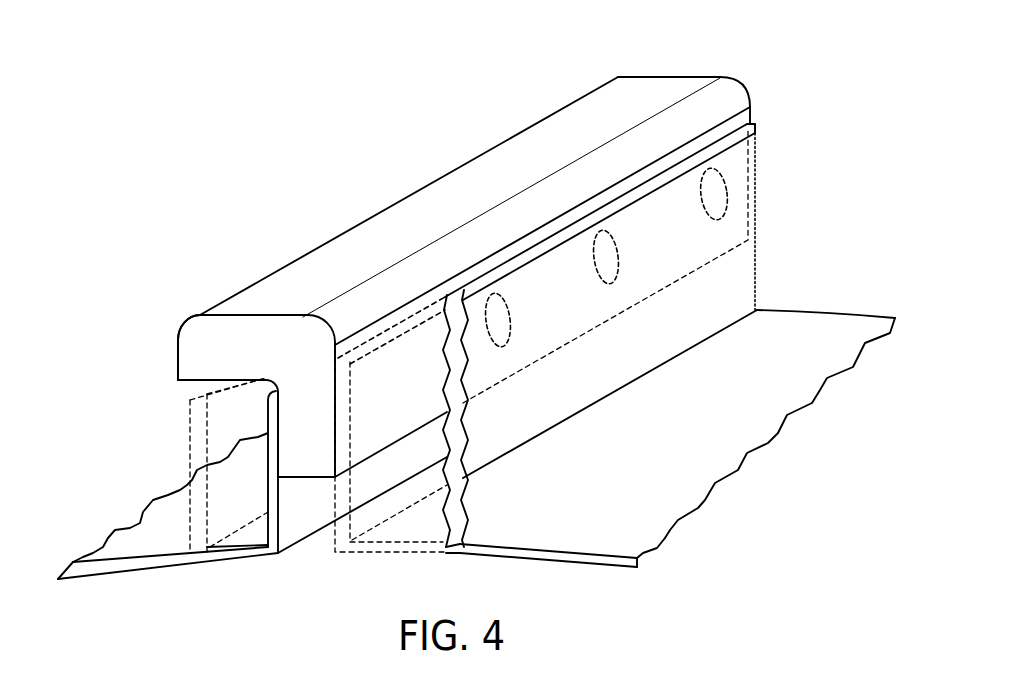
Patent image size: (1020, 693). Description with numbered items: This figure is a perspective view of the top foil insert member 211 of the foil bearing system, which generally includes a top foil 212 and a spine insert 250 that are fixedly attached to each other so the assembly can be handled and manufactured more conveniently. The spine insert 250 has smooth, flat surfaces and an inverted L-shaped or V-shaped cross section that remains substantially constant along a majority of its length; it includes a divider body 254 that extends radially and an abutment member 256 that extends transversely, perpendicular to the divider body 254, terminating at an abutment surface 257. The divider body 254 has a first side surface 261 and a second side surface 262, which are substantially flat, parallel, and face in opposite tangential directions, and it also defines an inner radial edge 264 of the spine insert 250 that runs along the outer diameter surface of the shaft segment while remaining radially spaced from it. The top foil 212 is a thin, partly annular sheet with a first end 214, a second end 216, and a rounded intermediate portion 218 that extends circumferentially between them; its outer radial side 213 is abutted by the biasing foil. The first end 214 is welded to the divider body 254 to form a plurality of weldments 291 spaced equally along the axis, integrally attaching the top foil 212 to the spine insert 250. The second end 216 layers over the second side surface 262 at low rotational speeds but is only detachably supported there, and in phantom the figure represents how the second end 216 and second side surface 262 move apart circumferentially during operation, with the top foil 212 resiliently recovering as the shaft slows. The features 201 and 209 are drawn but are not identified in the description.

The top foil insert member 211 is at (274, 144).
The spine insert 250 is at (571, 112).
The rear top edge 201 is at (296, 272).
The top surface 209 is at (430, 272).
The first end 214 is at (553, 256).
The abutment member 256 is at (203, 330).
The abutment surface 257 is at (177, 360).
The divider body 254 is at (327, 415).
The first side surface 261 is at (375, 430).
The inner radial edge 264 is at (297, 479).
The second side surface 262 is at (270, 463).
The second end 216 is at (272, 433).
The outer radial side 213 is at (668, 445).
The intermediate portion 218 is at (647, 542).
The top foil 212 is at (578, 542).
The weldments 291 is at (710, 197).